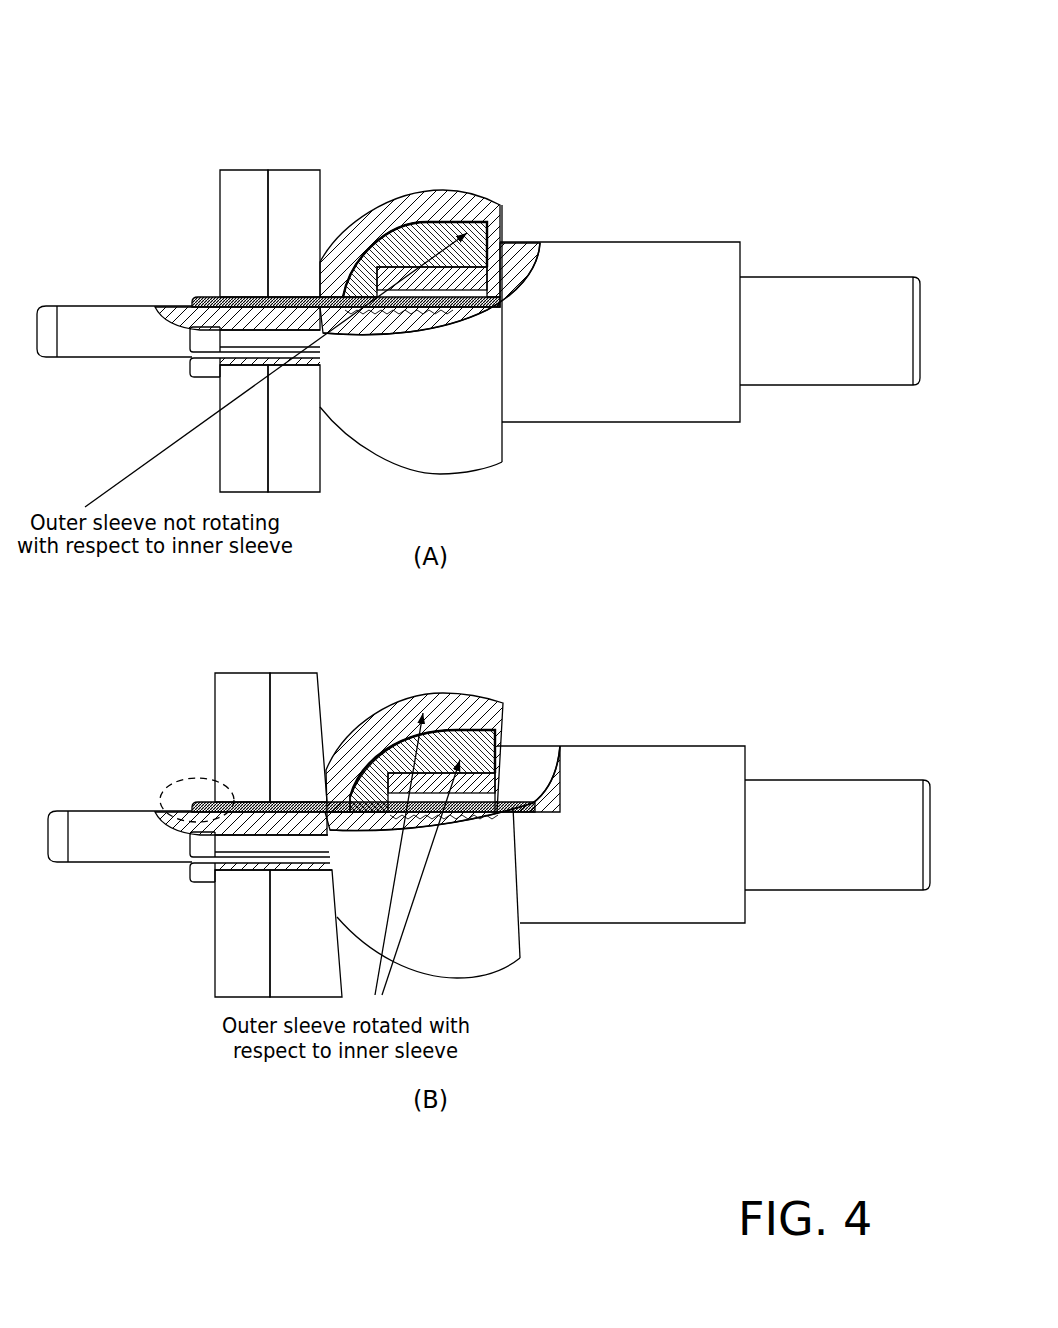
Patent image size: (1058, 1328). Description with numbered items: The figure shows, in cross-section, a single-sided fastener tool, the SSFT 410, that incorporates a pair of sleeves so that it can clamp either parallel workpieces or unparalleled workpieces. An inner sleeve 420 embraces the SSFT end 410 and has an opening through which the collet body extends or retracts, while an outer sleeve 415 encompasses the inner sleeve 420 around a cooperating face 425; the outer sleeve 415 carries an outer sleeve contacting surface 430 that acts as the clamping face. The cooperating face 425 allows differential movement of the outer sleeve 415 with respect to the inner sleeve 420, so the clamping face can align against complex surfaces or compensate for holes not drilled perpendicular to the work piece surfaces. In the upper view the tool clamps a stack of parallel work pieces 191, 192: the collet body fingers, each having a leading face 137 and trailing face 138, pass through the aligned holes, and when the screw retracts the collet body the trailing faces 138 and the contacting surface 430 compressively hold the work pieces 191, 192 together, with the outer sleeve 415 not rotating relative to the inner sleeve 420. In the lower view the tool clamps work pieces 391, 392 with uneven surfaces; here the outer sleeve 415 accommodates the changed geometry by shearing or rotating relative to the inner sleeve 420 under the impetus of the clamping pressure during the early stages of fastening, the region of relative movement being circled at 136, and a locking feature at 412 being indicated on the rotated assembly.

The clearance gap 136 is at (187, 777).
The leading face 137 is at (210, 293).
The trailing face 138 is at (313, 273).
The work piece 191 is at (242, 168).
The work piece 192 is at (285, 168).
The work piece 391 is at (233, 672).
The work piece 392 is at (293, 672).
The SSFT 410 is at (692, 242).
The locking member 412 is at (487, 785).
The outer sleeve 415 is at (412, 203).
The inner sleeve 420 is at (380, 200).
The cooperating face 425 is at (429, 220).
The outer sleeve contacting surface 430 is at (222, 291).